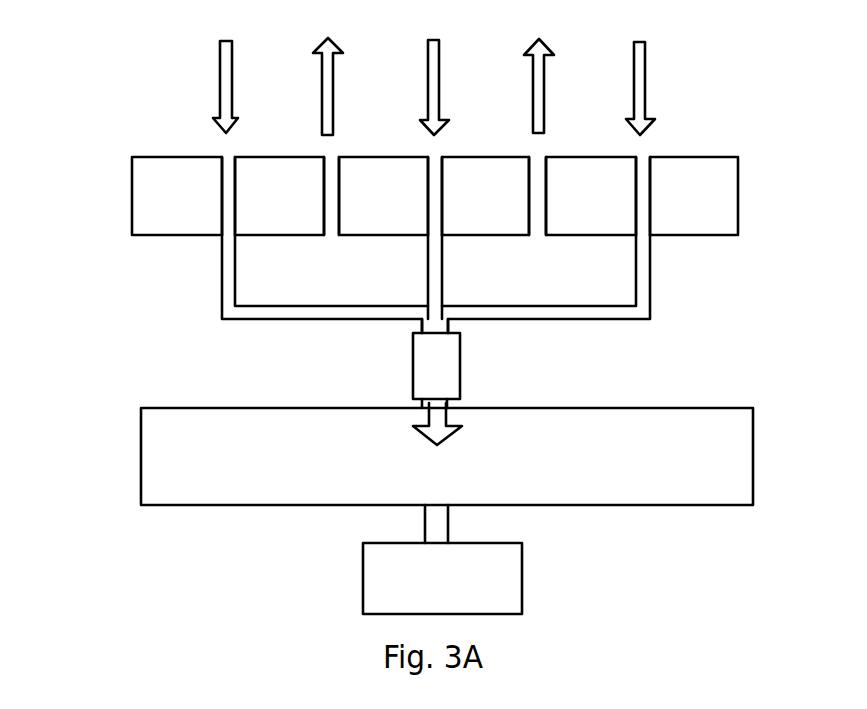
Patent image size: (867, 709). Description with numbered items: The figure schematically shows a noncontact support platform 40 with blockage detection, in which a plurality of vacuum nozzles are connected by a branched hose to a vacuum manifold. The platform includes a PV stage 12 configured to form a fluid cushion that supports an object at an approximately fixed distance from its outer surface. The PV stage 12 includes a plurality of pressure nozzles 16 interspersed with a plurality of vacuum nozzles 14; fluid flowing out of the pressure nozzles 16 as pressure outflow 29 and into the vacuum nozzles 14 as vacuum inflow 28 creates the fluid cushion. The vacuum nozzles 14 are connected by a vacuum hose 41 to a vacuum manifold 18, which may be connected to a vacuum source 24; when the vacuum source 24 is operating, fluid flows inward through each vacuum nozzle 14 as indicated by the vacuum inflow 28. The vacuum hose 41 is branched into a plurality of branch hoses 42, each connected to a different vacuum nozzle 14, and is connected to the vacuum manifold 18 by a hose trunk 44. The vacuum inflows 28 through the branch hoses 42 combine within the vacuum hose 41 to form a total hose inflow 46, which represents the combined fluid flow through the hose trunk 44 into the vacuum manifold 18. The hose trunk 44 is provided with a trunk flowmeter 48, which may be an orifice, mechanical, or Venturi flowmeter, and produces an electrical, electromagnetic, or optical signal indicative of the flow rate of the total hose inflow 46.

The PV stage 12 is at (132, 196).
The vacuum nozzles 14 is at (228, 174).
The pressure nozzles 16 is at (332, 179).
The vacuum manifold 18 is at (141, 470).
The vacuum source 24 is at (362, 581).
The vacuum inflow 28 is at (220, 90).
The pressure outflow 29 is at (322, 90).
The noncontact support platform 40 is at (753, 106).
The vacuum hose 41 is at (707, 310).
The branch hoses 42 is at (222, 267).
The hose trunk 44 is at (450, 322).
The total hose inflow 46 is at (430, 416).
The trunk flowmeter 48 is at (412, 372).